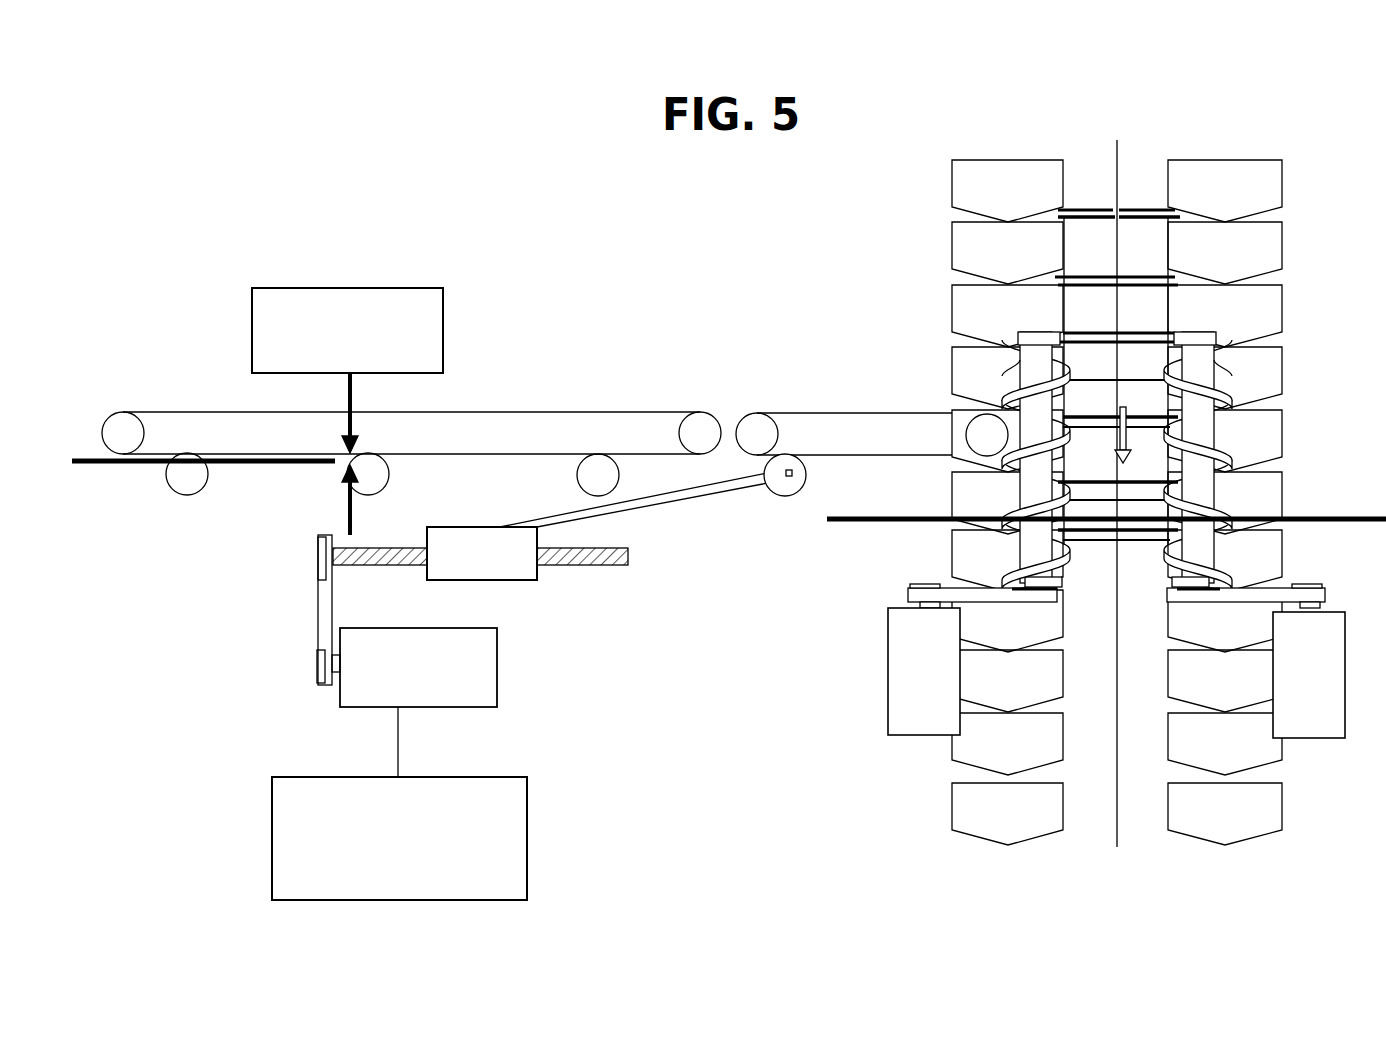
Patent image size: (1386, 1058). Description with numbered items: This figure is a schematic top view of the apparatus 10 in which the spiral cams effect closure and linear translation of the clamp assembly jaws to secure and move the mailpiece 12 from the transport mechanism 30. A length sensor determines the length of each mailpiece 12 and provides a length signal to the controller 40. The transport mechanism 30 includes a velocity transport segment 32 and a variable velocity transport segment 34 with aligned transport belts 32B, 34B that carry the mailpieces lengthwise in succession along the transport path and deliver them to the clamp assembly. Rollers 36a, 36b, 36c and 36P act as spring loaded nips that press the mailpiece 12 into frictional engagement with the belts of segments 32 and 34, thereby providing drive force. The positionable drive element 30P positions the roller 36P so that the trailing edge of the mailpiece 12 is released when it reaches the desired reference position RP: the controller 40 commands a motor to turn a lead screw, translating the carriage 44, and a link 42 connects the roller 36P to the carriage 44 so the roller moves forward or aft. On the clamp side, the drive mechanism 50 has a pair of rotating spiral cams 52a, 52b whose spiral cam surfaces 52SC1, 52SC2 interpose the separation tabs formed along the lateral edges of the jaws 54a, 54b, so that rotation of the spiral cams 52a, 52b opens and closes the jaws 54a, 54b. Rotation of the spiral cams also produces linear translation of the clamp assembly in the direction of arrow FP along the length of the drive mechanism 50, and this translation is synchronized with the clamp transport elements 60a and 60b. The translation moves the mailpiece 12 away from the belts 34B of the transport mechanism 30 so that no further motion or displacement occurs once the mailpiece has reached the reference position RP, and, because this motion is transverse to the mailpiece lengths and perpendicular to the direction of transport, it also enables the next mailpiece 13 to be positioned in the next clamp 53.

The web handling and stacking system 10 is at (837, 298).
The mailpiece 12 is at (893, 522).
The next mailpiece 13 is at (287, 465).
The transport mechanism 30 is at (792, 352).
The conveyor positioning drive 30P is at (712, 624).
The velocity transport segment 32 is at (615, 405).
The transport belt 32B is at (182, 410).
The variable velocity transport segment 34 is at (815, 402).
The transport belt 34B is at (853, 412).
The roller 36a is at (198, 495).
The roller 36b is at (390, 473).
The roller 36c is at (577, 473).
The roller 36P is at (773, 495).
The controller 40 is at (530, 835).
The link 42 is at (683, 503).
The carriage 44 is at (507, 580).
The drive mechanism 50 is at (1115, 526).
The spiral cam 52a is at (1047, 555).
The spiral cam 52b is at (1193, 575).
The spiral cam surface 52SC1 is at (1040, 330).
The spiral cam surface 52SC2 is at (1010, 382).
The next clamp 53 is at (1090, 452).
The clamp assembly jaw 54a is at (1137, 207).
The clamp assembly jaw 54b is at (1153, 223).
The clamp transport element 60a is at (978, 823).
The clamp transport element 60b is at (1257, 823).
The direction of linear translation FP is at (1127, 442).
The reference position RP is at (1115, 162).